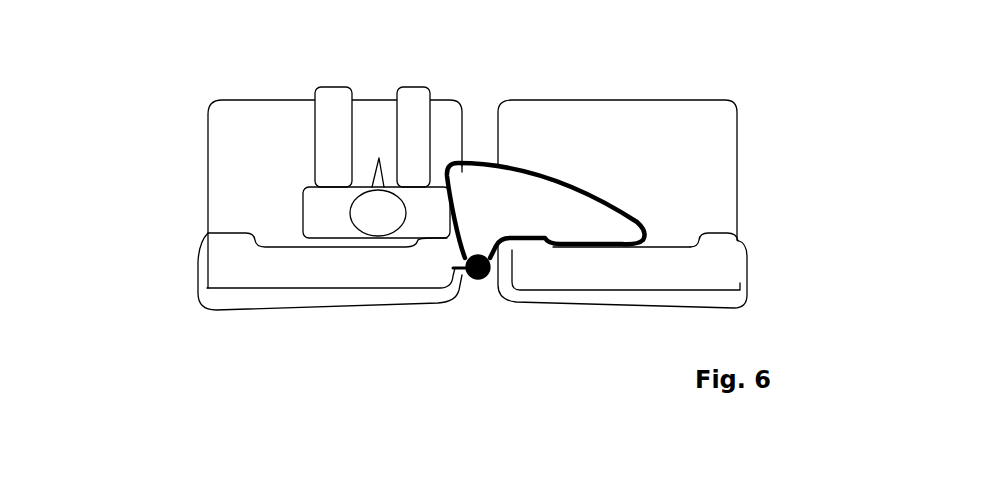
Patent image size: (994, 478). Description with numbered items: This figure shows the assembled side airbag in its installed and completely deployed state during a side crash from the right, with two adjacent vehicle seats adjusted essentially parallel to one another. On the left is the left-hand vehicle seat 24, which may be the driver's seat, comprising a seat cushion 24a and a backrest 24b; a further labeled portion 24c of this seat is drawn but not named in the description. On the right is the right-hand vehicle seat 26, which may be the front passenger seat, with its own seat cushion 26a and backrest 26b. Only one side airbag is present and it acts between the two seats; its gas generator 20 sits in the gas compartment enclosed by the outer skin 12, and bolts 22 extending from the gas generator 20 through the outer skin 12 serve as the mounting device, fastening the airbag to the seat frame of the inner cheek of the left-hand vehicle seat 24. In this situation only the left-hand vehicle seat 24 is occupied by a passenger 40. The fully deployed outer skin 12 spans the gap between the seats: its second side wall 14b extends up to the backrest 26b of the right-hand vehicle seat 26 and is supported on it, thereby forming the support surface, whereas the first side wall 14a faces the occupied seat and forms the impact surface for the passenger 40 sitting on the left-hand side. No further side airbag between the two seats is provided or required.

The outer skin 12 is at (534, 183).
The first side wall 14a is at (448, 232).
The second side wall 14b is at (598, 247).
The gas generator 20 is at (482, 277).
The bolts 22 is at (455, 270).
The left-hand vehicle seat 24 is at (220, 300).
The seat cushion 24a is at (287, 133).
The backrest 24b is at (322, 267).
The connecting strap 24c is at (527, 168).
The right-hand vehicle seat 26 is at (728, 300).
The seat cushion 26a is at (718, 155).
The backrest 26b is at (723, 267).
The passenger 40 is at (330, 213).